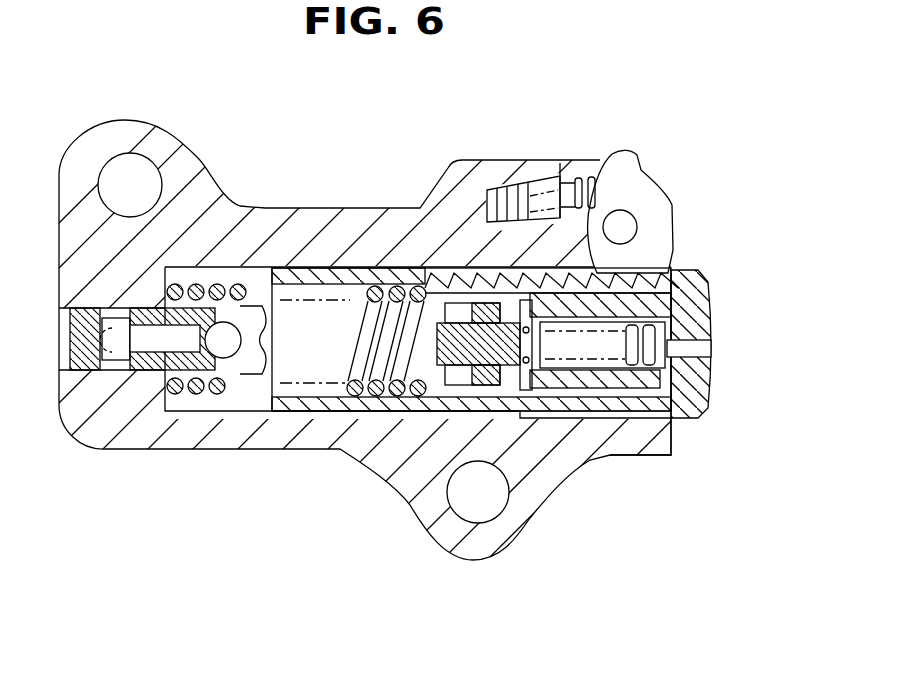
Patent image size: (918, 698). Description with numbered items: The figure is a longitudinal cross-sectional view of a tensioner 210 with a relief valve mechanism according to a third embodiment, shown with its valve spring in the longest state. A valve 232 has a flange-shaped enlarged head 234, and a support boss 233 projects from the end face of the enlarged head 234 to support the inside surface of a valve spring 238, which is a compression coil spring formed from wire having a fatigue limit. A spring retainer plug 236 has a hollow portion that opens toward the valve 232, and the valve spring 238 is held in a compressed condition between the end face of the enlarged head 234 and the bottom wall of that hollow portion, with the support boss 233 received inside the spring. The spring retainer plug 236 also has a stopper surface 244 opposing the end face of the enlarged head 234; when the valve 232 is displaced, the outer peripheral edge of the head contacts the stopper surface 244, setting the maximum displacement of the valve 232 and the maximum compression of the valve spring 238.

The tensioner 210 is at (356, 175).
The valve 232 is at (410, 418).
The support boss 233 is at (547, 312).
The flange-shaped enlarged head 234 is at (503, 322).
The spring retainer plug 236 is at (675, 313).
The valve spring 238 is at (668, 438).
The stopper surface 244 is at (530, 398).